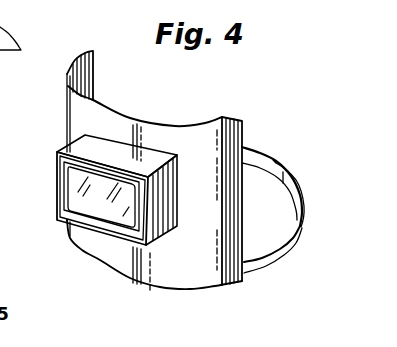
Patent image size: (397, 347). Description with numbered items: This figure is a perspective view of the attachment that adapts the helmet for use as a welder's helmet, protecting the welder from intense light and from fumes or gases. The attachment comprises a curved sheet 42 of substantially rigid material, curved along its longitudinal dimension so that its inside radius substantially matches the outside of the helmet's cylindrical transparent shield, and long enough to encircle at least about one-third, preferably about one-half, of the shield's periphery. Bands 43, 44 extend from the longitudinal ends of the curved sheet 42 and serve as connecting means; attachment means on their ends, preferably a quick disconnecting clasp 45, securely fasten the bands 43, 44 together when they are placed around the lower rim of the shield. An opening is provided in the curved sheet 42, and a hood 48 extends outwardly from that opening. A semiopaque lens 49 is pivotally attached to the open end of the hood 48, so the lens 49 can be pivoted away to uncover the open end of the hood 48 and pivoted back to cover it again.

The curved sheet 42 is at (85, 120).
The band 43 is at (274, 262).
The band 44 is at (254, 153).
The quick disconnecting clasp 45 is at (283, 165).
The hood 48 is at (107, 181).
The semiopaque lens 49 is at (73, 190).